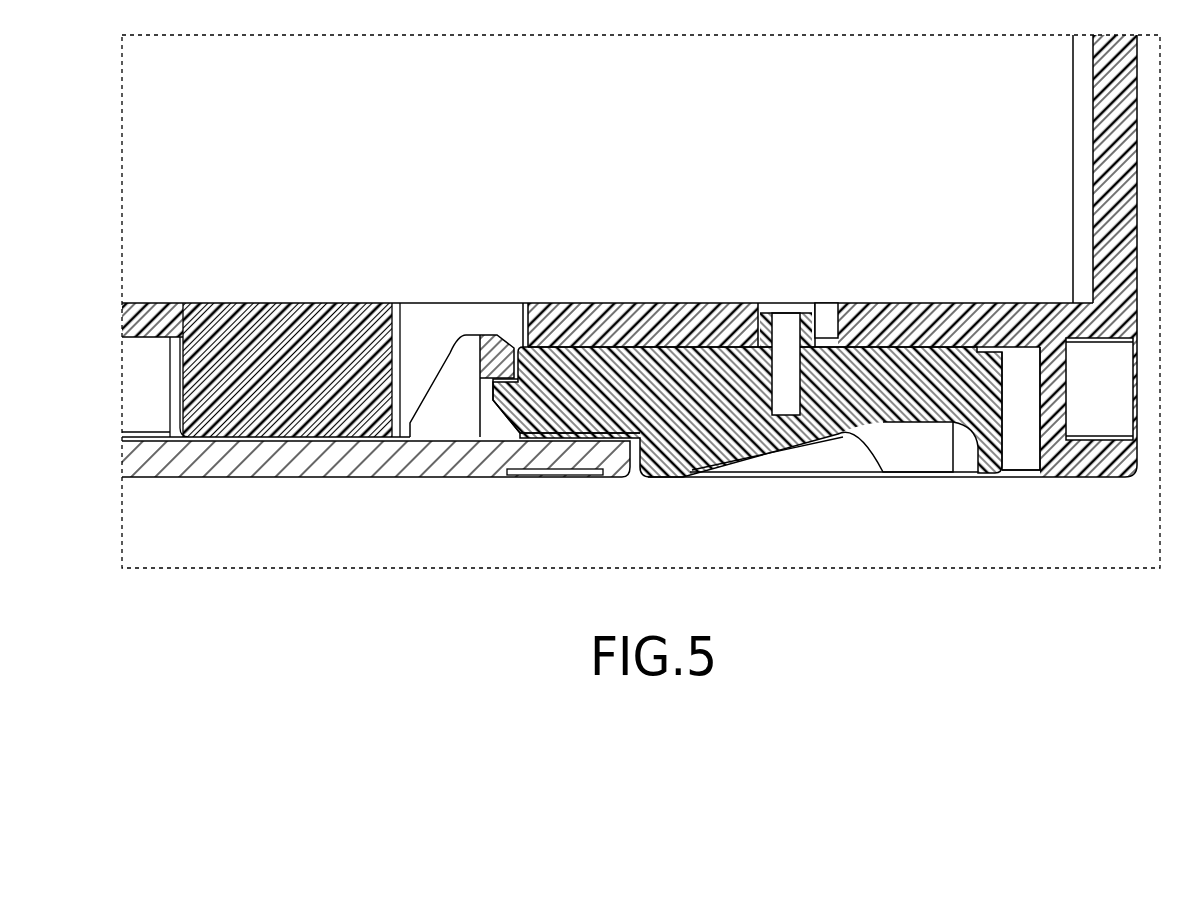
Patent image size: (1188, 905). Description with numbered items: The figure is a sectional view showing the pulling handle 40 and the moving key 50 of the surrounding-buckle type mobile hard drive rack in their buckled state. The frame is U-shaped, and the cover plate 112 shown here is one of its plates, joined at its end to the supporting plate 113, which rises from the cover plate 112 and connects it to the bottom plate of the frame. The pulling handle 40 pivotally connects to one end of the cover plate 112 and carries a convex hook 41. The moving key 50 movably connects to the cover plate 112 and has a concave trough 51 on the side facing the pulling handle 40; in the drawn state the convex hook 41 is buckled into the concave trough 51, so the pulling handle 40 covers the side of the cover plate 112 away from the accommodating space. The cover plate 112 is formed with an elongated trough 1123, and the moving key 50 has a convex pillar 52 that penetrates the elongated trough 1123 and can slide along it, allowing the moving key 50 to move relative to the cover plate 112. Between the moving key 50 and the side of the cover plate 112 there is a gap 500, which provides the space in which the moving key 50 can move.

The pulling handle 40 is at (305, 462).
The convex hook 41 is at (498, 348).
The moving key 50 is at (848, 420).
The concave trough 51 is at (507, 402).
The convex pillar 52 is at (817, 307).
The cover plate 112 is at (991, 318).
The supporting plate 113 is at (1107, 137).
The gap 500 is at (1023, 457).
The elongated trough 1123 is at (827, 313).